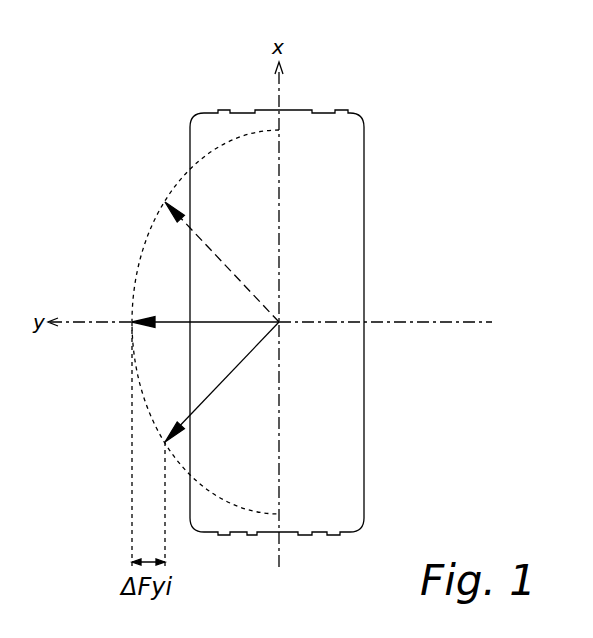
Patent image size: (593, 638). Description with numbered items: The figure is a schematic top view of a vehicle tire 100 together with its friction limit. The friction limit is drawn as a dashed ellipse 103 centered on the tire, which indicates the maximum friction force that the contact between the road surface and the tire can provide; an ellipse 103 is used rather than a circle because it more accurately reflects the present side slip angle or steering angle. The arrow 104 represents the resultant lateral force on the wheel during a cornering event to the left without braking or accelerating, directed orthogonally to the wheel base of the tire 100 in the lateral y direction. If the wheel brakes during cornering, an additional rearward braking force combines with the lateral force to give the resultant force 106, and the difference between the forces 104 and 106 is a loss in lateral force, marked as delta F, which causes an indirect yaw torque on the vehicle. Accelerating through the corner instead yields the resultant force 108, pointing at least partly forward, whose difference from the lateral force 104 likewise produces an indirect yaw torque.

The vehicle tire 100 is at (362, 116).
The ellipse 103 is at (177, 184).
The arrow 104 is at (172, 322).
The resultant force 106 is at (218, 390).
The resultant force 108 is at (220, 255).